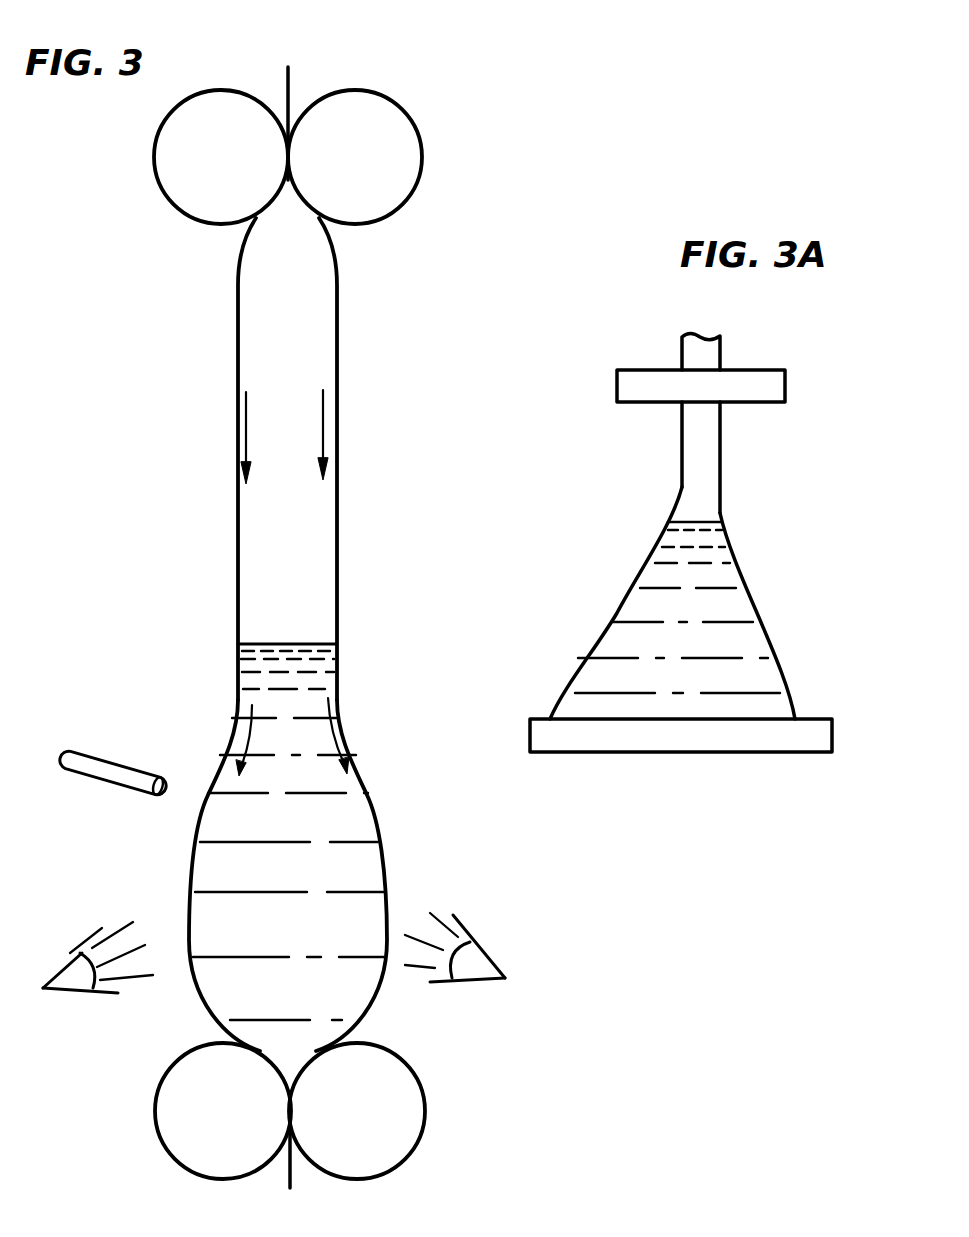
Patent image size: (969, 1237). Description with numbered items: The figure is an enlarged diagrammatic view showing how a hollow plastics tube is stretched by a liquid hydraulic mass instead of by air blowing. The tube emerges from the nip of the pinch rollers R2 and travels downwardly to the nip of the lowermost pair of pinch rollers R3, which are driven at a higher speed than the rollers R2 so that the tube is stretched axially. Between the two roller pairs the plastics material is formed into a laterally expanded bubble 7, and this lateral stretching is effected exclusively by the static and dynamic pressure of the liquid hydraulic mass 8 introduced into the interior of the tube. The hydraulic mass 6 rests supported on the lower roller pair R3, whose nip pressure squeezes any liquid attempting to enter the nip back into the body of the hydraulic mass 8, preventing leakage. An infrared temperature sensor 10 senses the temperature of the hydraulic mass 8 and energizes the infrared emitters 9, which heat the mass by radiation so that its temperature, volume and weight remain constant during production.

In FIG. 3, the pinch rollers R2 is at (385, 212).
In FIG. 3A, the pinch rollers R2 is at (770, 392).
In FIG. 3, the lowermost pair of pinch rollers R3 is at (415, 1077).
In FIG. 3A, the lowermost pair of pinch rollers R3 is at (805, 743).
In FIG. 3A, the hydraulic mass 6 is at (713, 353).
In FIG. 3, the bubble 7 is at (337, 524).
In FIG. 3, the liquid hydraulic mass 8 is at (357, 853).
In FIG. 3A, the liquid hydraulic mass 8 is at (747, 627).
In FIG. 3, the infrared emitters 9 is at (75, 957).
In FIG. 3, the infrared temperature sensor 10 is at (143, 766).